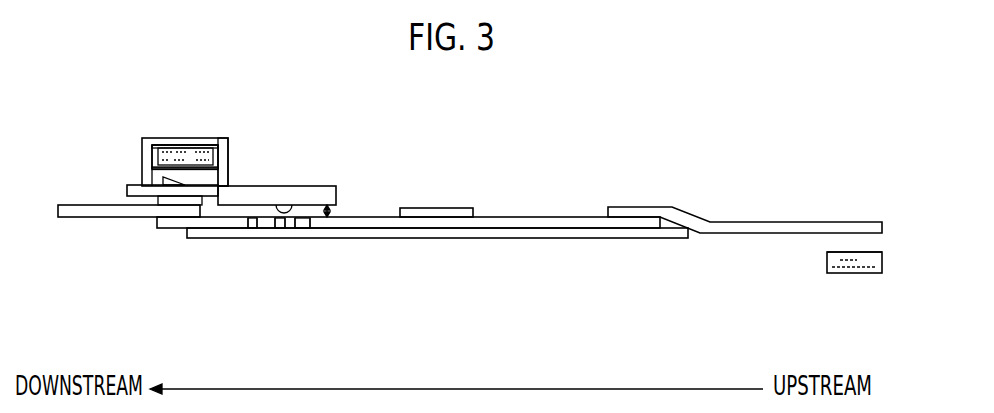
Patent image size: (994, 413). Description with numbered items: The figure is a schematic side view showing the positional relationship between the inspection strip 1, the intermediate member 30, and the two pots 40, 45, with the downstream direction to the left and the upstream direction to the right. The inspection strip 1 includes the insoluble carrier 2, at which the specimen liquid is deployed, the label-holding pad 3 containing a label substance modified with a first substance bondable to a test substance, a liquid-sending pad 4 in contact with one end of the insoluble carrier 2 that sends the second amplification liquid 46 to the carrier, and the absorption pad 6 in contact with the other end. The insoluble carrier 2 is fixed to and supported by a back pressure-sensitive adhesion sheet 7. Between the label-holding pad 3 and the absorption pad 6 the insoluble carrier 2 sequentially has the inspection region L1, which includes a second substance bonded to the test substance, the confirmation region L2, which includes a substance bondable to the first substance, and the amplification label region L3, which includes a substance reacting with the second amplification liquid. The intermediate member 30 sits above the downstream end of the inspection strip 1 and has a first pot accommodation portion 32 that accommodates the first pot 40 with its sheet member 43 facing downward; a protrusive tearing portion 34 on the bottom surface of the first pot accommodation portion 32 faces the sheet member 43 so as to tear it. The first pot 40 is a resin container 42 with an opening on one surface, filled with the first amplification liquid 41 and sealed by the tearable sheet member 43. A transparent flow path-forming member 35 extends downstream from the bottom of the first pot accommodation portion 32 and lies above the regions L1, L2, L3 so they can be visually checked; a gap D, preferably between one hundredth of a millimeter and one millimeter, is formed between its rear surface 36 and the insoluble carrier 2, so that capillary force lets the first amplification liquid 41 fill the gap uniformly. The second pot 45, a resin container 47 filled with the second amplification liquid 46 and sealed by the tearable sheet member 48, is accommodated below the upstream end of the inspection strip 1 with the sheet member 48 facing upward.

The inspection strip 1 is at (692, 143).
The insoluble carrier 2 is at (573, 217).
The label-holding pad 3 is at (427, 213).
The liquid-sending pad 4 is at (788, 226).
The absorption pad 6 is at (73, 217).
The back pressure-sensitive adhesion sheet 7 is at (343, 238).
The intermediate member 30 is at (147, 138).
The first pot accommodation portion 32 is at (222, 138).
The tearing portion 34 is at (163, 179).
The flow path-forming member 35 is at (249, 187).
The rear surface 36 is at (286, 206).
The first pot 40 is at (175, 150).
The first amplification liquid 41 is at (152, 142).
The container 42 is at (147, 160).
The sheet member 43 is at (163, 168).
The second pot 45 is at (883, 265).
The second amplification liquid 46 is at (857, 273).
The container 47 is at (827, 262).
The sheet member 48 is at (872, 253).
The gap D is at (332, 213).
The inspection region L1 is at (303, 229).
The confirmation region L2 is at (277, 229).
The amplification label region L3 is at (253, 229).